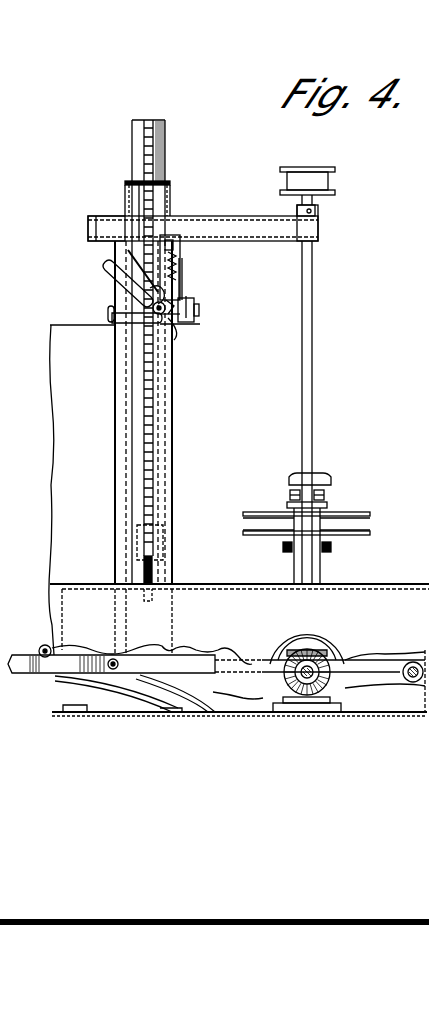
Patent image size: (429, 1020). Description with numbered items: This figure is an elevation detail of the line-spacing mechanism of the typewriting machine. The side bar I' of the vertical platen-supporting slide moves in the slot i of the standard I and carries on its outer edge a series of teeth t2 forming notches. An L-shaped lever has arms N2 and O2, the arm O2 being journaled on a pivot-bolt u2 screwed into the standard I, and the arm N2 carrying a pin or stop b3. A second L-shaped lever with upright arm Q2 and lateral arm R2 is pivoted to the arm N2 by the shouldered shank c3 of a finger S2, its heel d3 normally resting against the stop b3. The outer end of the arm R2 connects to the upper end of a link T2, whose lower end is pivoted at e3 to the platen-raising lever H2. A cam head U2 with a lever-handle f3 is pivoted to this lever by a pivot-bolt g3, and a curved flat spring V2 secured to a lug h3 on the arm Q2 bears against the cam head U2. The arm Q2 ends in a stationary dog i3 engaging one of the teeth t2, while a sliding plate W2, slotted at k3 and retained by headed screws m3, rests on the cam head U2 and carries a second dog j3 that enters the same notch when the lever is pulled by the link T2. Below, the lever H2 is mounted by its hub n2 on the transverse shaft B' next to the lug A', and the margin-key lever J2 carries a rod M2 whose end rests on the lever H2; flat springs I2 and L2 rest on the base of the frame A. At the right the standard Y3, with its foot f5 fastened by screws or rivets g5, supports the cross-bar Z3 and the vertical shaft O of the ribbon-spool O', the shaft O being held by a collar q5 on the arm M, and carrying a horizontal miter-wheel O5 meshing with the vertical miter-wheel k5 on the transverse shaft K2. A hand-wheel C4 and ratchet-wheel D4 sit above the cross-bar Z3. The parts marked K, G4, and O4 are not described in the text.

The teeth t2 is at (150, 142).
The stationary dog i3 is at (140, 250).
The side bar I' is at (164, 178).
The dog j3 is at (160, 252).
The sliding plate W2 is at (172, 246).
The upright arm Q2 is at (124, 232).
The frame arm K is at (88, 235).
The headed screws m3 is at (150, 266).
The lug h3 is at (171, 246).
The vertical slot k3 is at (176, 264).
The pivot-bolt g3 is at (183, 292).
The lever-handle f3 is at (114, 262).
The cam head U2 is at (148, 290).
The shouldered shank c3 is at (148, 306).
The heel d3 is at (170, 304).
The curved flat spring V2 is at (190, 300).
The arm O2 is at (183, 310).
The pivot-bolt u2 is at (200, 314).
The pin or stop b3 is at (182, 326).
The lateral arm R2 is at (120, 318).
The arm N2 is at (178, 326).
The rearward-extending arm M is at (246, 242).
The ribbon-spool O' is at (321, 186).
The collar q5 is at (316, 210).
The vertical shaft O is at (322, 412).
The link T2 is at (114, 449).
The hand-wheel C4 is at (325, 478).
The ratchet-wheel D4 is at (326, 493).
The transverse cross-bar Z3 is at (328, 504).
The beam G4 is at (368, 524).
The right-hand standard Y3 is at (322, 561).
The bolts O4 is at (283, 548).
The slot i is at (143, 567).
The standard I is at (166, 549).
The margin-key lever J2 is at (30, 657).
The finger S2 is at (47, 641).
The rod M2 is at (58, 660).
The pivotal connection e3 is at (116, 660).
The platen-raising lever H2 is at (168, 664).
The frame A is at (239, 725).
The flat spring L2 is at (136, 712).
The flat spring I2 is at (168, 712).
The horizontal miter-wheel O5 is at (318, 648).
The vertical miter-wheel k5 is at (290, 688).
The screws or rivets g5 is at (298, 704).
The transverse shaft K2 is at (308, 680).
The foot f5 is at (342, 708).
The lug A' is at (343, 668).
The transverse shaft B' is at (405, 686).
The hub n2 is at (408, 690).